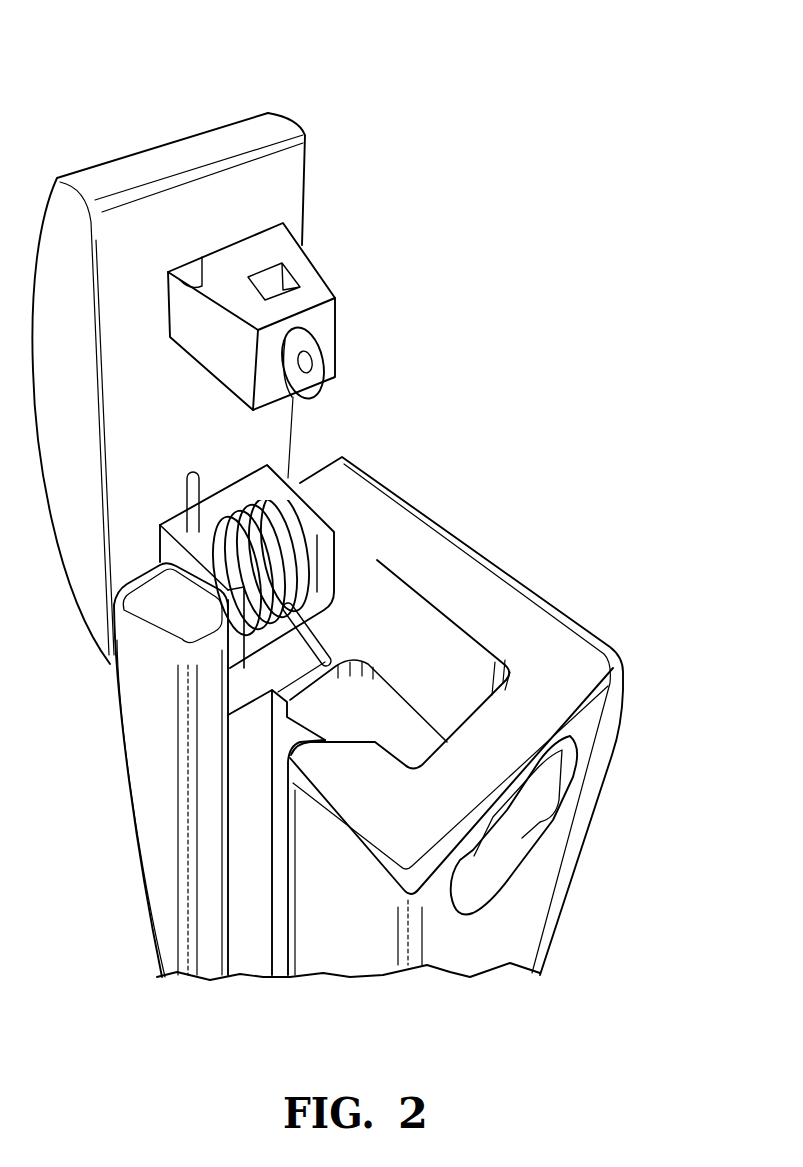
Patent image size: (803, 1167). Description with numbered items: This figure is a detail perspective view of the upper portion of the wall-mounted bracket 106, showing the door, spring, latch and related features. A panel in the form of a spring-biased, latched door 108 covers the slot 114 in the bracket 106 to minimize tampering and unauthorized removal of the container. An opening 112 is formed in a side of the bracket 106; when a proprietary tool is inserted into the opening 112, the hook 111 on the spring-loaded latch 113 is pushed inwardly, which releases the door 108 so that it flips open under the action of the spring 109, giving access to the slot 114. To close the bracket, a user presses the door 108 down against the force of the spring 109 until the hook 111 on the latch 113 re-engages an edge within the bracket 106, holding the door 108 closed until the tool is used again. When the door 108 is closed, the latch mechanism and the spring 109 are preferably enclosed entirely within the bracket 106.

The wall-mounted bracket 106 is at (517, 572).
The door 108 is at (307, 138).
The spring 109 is at (307, 505).
The hook 111 is at (322, 270).
The opening 112 is at (513, 832).
The spring-loaded latch 113 is at (338, 338).
The slot 114 is at (193, 852).